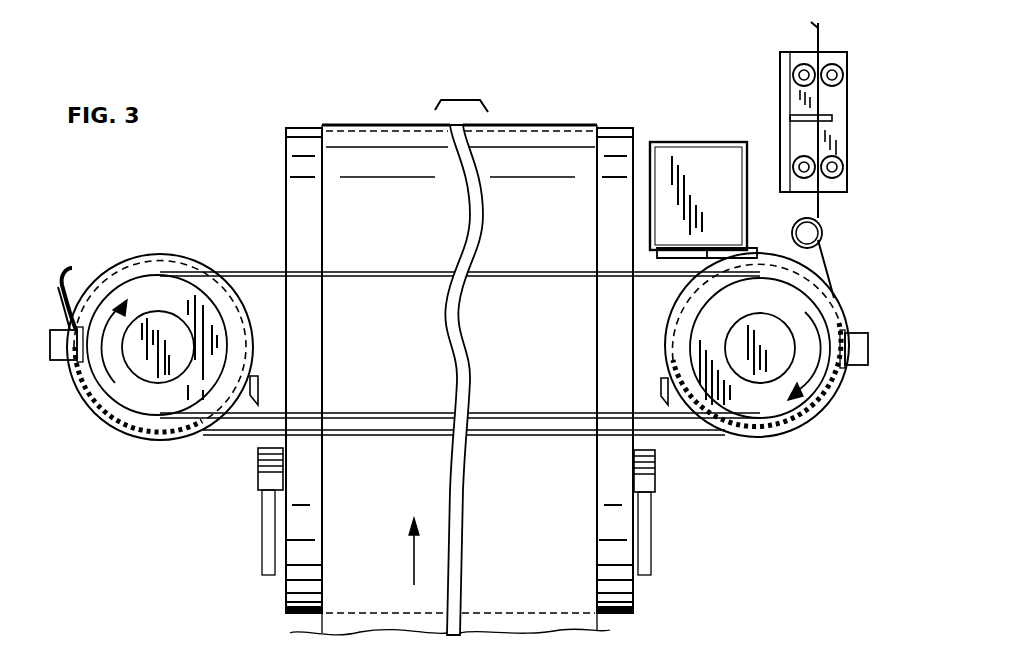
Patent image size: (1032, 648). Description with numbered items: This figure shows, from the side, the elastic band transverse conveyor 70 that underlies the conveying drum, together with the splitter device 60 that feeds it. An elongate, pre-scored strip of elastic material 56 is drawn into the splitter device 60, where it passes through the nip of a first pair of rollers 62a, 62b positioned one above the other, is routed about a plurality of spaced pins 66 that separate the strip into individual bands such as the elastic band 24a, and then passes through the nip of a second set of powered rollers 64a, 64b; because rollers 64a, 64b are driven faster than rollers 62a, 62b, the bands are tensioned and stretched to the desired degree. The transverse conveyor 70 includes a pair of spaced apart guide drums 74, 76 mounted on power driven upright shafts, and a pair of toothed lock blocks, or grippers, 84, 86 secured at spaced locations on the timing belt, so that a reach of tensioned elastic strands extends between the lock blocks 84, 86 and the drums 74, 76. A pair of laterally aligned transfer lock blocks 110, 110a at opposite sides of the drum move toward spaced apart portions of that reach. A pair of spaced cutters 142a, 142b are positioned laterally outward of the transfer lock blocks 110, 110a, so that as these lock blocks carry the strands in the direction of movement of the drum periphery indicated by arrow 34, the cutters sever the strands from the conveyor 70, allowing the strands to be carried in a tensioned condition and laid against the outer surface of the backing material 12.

The backing material 12 is at (533, 215).
The elastic band 24a is at (392, 437).
The arrow 34 is at (414, 545).
The elastic strip material 56 is at (822, 36).
The splitter device 60 is at (768, 91).
The first pair roller 62a is at (800, 64).
The first pair roller 62b is at (841, 85).
The powered roller 64a is at (798, 157).
The powered roller 64b is at (845, 170).
The spaced pins 66 is at (826, 121).
The elastic band transverse conveyor 70 is at (788, 468).
The guide drum 74 is at (122, 432).
The guide drum 76 is at (820, 420).
The toothed lock block 84 is at (50, 350).
The toothed lock block 86 is at (867, 352).
The transfer lock block 110 is at (650, 483).
The transfer lock block 110a is at (264, 480).
The cutter 142a is at (262, 392).
The cutter 142b is at (658, 390).